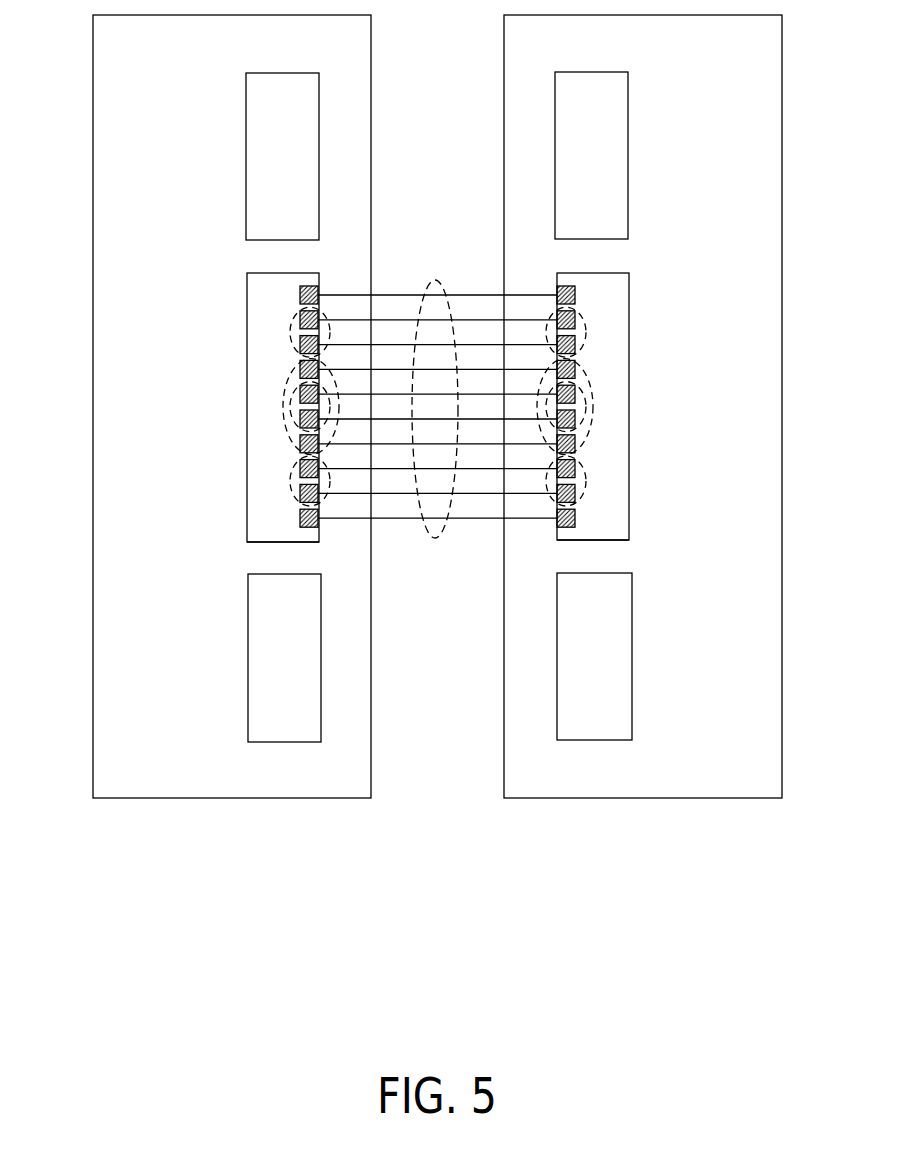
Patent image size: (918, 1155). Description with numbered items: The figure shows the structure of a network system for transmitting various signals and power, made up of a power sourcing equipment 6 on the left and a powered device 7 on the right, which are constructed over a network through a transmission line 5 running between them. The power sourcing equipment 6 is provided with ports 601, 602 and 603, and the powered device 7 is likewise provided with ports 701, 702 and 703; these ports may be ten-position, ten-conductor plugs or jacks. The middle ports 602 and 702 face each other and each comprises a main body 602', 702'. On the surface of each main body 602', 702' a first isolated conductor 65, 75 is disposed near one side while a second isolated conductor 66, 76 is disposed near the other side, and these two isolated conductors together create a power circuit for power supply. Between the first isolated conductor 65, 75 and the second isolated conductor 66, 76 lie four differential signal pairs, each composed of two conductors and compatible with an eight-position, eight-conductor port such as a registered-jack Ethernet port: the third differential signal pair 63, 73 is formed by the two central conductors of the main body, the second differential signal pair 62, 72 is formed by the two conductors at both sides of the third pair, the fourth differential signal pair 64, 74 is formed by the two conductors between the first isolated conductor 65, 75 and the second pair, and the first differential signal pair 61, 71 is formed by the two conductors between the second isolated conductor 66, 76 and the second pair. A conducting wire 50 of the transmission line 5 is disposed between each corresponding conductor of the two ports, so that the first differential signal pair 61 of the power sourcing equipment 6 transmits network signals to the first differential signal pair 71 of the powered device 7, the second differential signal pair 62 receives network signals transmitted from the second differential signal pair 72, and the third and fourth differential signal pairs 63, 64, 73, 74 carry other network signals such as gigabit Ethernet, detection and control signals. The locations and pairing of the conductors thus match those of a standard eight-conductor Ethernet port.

The transmission line 5 is at (436, 540).
The conducting wire 50 is at (407, 298).
The power sourcing equipment 6 is at (62, 680).
The powered device 7 is at (818, 678).
The port 601 is at (340, 108).
The port 602 is at (331, 365).
The main body 602' is at (337, 578).
The port 603 is at (345, 735).
The port 701 is at (535, 108).
The port 702 is at (544, 364).
The main body 702' is at (541, 577).
The port 703 is at (530, 735).
The first differential signal pair 61 is at (290, 480).
The second differential signal pair 62 is at (283, 376).
The third differential signal pair 63 is at (290, 412).
The fourth differential signal pair 64 is at (290, 333).
The first isolated conductor 65 is at (300, 295).
The second isolated conductor 66 is at (300, 518).
The first differential signal pair 71 is at (586, 470).
The second differential signal pair 72 is at (594, 380).
The third differential signal pair 73 is at (588, 413).
The fourth differential signal pair 74 is at (586, 333).
The first isolated conductor 75 is at (576, 295).
The second isolated conductor 76 is at (576, 518).